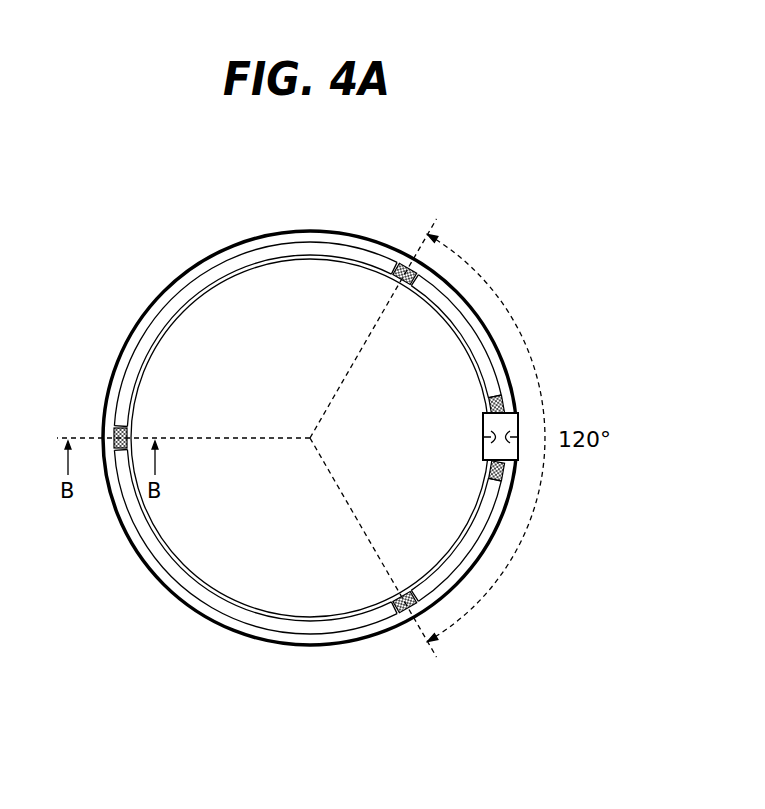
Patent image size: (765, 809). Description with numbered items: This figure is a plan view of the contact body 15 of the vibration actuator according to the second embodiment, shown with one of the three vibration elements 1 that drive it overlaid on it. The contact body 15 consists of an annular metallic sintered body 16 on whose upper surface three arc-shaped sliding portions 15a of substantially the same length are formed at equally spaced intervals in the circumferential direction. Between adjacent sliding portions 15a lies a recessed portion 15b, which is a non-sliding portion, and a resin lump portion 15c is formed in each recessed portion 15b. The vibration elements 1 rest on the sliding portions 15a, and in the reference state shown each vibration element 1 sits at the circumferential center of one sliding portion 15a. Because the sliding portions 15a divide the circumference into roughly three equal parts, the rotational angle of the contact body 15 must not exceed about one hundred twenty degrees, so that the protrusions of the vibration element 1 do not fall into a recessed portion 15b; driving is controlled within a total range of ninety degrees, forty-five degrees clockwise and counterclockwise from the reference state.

The contact body 15 is at (336, 157).
The annular metallic sintered body 16 is at (302, 233).
The sliding portion 15a is at (158, 300).
The recessed portion 15b is at (410, 265).
The resin lump portion 15c is at (400, 285).
The vibration element 1 is at (500, 437).